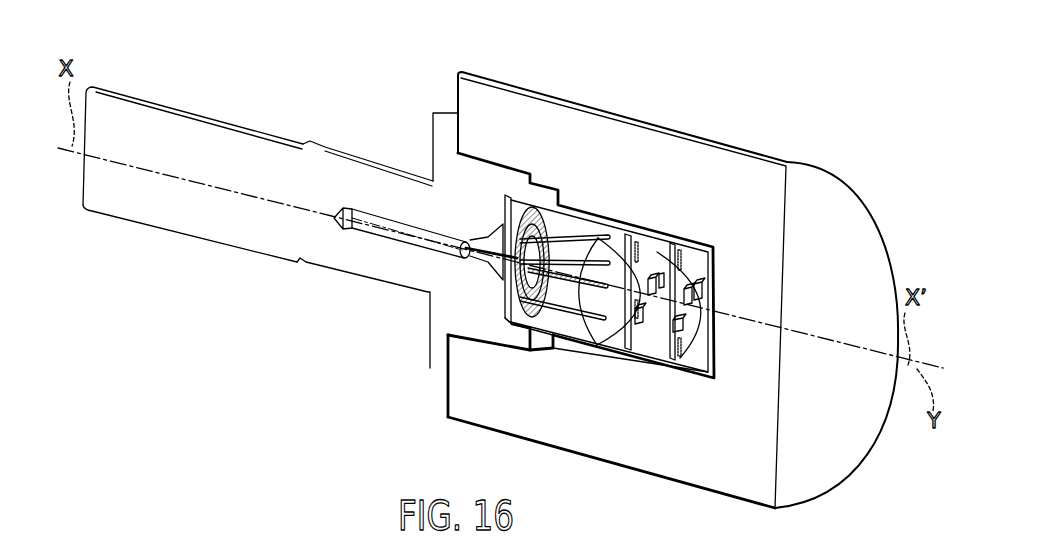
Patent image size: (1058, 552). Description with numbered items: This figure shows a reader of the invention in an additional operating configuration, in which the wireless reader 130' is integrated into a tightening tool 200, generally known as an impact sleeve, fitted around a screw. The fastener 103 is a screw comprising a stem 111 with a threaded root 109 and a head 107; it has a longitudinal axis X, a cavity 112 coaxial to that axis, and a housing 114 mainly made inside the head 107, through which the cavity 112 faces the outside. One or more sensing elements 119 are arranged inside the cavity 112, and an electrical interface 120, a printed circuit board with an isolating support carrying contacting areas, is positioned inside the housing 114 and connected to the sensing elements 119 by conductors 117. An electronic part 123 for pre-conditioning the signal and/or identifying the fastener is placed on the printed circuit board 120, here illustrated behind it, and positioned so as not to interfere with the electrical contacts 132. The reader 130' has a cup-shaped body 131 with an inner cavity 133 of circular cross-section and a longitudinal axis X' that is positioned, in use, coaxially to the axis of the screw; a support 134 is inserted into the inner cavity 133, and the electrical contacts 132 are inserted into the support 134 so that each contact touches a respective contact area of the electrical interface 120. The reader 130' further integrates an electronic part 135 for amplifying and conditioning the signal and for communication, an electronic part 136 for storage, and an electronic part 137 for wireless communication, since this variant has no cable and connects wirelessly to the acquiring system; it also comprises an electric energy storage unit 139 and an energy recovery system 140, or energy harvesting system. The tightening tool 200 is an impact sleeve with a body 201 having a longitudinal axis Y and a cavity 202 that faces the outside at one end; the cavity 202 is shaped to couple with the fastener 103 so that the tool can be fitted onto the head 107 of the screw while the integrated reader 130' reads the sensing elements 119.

The fastener 103 is at (237, 95).
The threaded root 109 is at (159, 98).
The stem 111 is at (397, 190).
The sensing element 119 is at (363, 215).
The head 107 is at (484, 174).
The tightening tool 200 is at (633, 105).
The body 201 is at (674, 160).
The cavity 202 is at (462, 330).
The reader 130' is at (609, 348).
The electronic part 123 is at (503, 221).
The housing 114 is at (509, 327).
The inner cavity 133 is at (688, 356).
The electrical interface 120 is at (539, 313).
The electrical contact 132 is at (548, 228).
The support 134 is at (586, 250).
The electronic part 135 is at (635, 236).
The body 131 is at (642, 238).
The energy recovery system 140 is at (658, 247).
The electric energy storage unit 139 is at (697, 286).
The electronic part 136 is at (692, 300).
The electronic part 137 is at (688, 321).
The cavity 112 is at (338, 230).
The conductor 117 is at (482, 256).